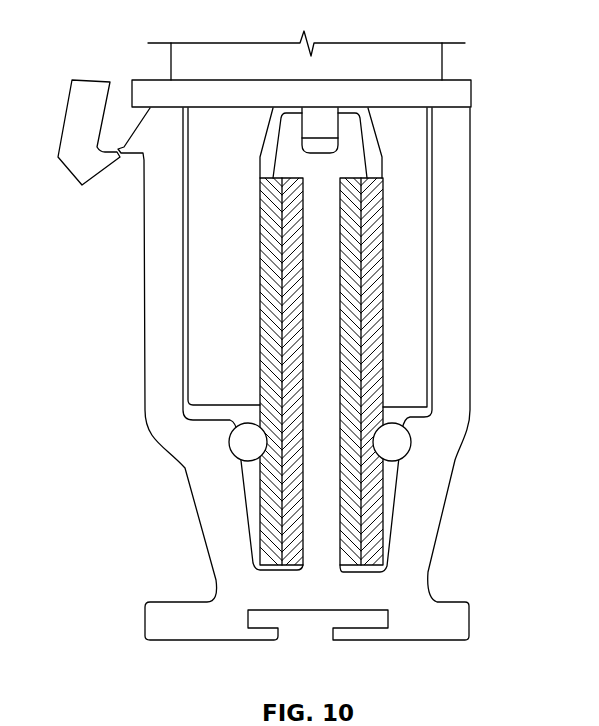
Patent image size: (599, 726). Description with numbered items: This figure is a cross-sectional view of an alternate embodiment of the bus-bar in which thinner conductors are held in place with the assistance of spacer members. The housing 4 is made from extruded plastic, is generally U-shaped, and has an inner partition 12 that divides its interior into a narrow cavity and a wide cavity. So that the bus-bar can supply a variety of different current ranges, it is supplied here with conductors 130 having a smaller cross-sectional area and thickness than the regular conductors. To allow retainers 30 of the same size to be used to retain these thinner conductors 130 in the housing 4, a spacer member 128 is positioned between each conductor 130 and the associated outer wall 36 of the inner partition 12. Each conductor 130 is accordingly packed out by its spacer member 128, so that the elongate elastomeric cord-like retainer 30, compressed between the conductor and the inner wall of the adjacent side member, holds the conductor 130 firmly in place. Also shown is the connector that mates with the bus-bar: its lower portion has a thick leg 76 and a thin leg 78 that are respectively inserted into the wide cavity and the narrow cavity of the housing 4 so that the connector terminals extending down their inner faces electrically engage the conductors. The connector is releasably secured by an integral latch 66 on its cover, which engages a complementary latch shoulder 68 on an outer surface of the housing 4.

The housing 4 is at (462, 530).
The inner partition 12 is at (320, 390).
The retainer 30 is at (242, 448).
The outer wall 36 is at (300, 278).
The latch 66 is at (80, 132).
The latch shoulder 68 is at (150, 127).
The thick leg 76 is at (205, 378).
The thin leg 78 is at (407, 352).
The spacer member 128 is at (293, 308).
The conductor 130 is at (273, 332).